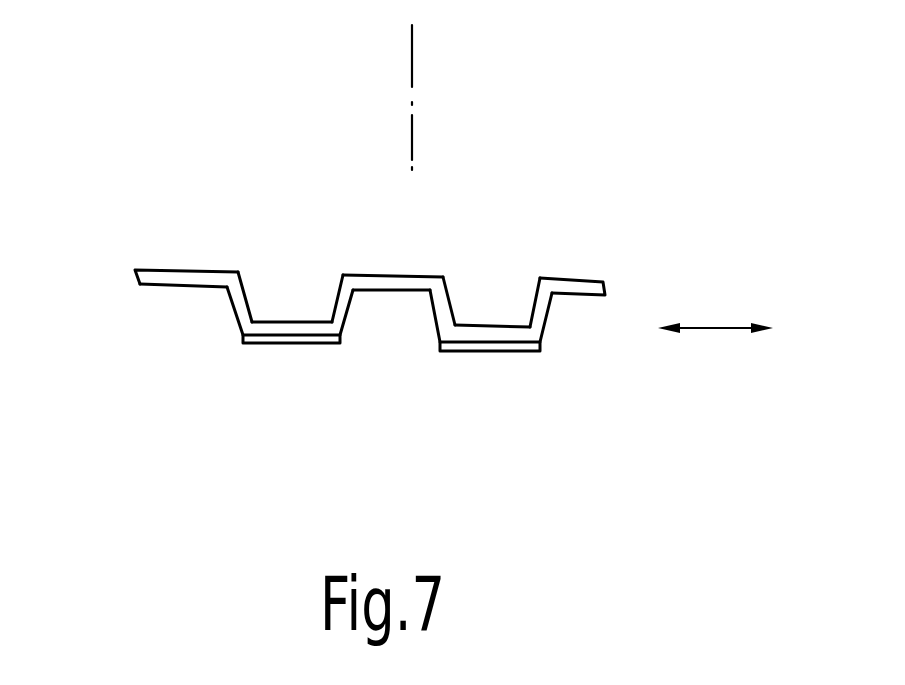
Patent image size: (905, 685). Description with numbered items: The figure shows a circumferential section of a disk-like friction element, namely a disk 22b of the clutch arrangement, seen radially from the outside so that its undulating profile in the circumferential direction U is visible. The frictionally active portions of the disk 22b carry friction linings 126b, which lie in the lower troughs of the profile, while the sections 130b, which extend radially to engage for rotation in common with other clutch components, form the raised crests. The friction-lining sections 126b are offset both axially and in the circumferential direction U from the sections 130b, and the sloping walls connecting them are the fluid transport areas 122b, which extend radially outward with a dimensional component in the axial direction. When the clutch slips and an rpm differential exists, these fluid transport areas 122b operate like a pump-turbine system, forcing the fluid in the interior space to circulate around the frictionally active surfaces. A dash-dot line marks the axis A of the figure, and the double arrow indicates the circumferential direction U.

The disk 22b is at (460, 301).
The fluid transport area 122b is at (337, 305).
The friction lining 126b is at (295, 343).
The section extending radially outward 130b is at (405, 278).
The axis A is at (412, 54).
The circumferential direction U is at (710, 328).